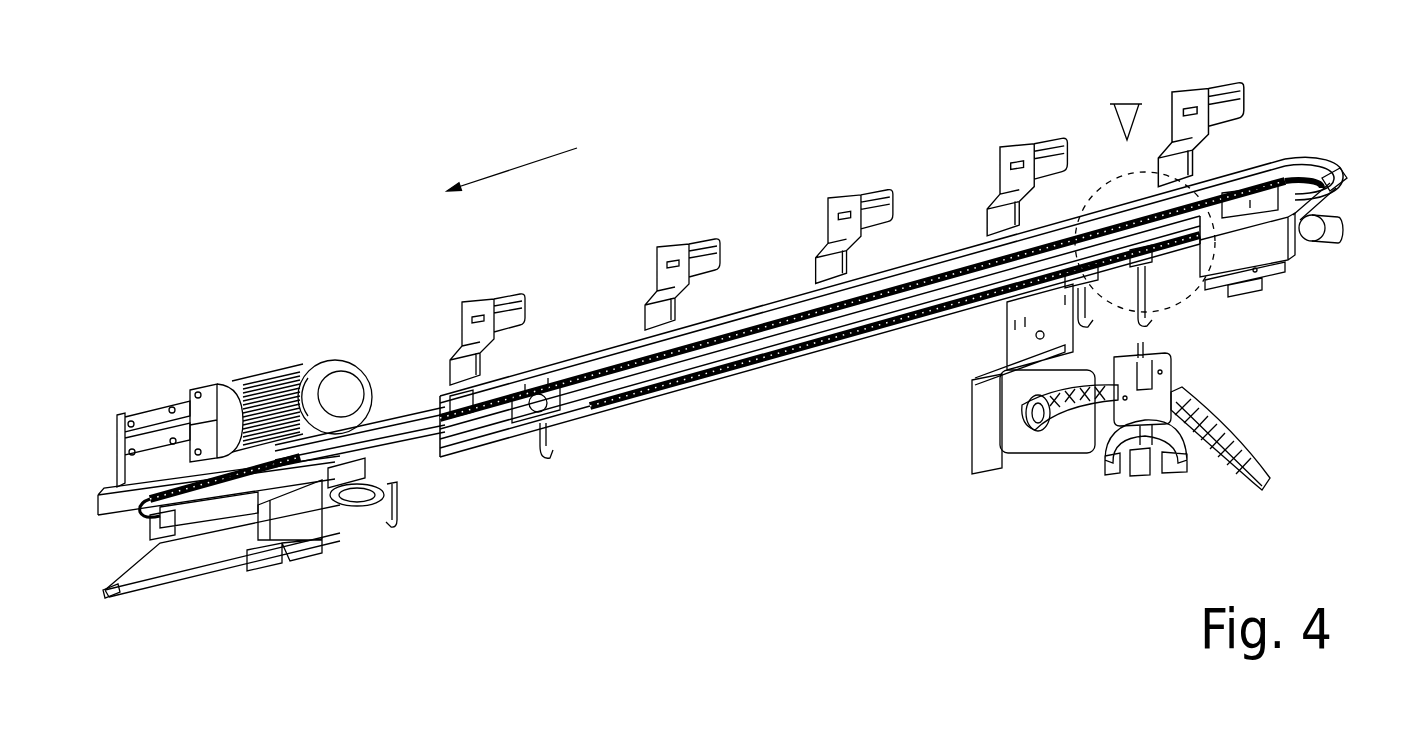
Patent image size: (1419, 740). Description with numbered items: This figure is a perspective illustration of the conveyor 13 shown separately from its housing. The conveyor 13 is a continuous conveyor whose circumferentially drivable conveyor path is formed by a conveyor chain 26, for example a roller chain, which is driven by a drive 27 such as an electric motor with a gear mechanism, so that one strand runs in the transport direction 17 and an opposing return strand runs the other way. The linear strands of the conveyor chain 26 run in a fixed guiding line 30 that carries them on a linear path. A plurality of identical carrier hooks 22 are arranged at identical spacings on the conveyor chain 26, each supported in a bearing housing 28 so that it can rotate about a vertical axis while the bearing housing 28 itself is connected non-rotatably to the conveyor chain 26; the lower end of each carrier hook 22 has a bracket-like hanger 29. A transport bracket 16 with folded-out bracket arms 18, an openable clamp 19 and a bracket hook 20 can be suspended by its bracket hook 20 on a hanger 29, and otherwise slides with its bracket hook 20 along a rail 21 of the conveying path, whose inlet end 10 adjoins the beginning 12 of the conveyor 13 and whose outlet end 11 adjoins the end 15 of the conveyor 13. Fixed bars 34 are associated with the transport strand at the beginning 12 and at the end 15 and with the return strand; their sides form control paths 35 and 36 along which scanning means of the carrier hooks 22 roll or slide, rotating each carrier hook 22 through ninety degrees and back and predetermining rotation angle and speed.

The inlet end 10 is at (732, 364).
The outlet end 11 is at (153, 568).
The beginning of the conveyor 12 is at (1209, 236).
The conveyor 13 is at (741, 300).
The end of the conveyor 15 is at (290, 426).
The transport bracket 16 is at (1148, 456).
The transport direction 17 is at (515, 165).
The bracket arms 18 is at (1063, 435).
The clamp 19 is at (1153, 468).
The bracket hook 20 is at (1188, 255).
The rail 21 is at (108, 593).
The carrier hook 22 is at (1120, 227).
The conveyor chain 26 is at (593, 363).
The drive 27 is at (320, 370).
The bearing housing 28 is at (551, 380).
The hanger 29 is at (548, 445).
The guiding line 30 is at (750, 348).
The bar 34 is at (410, 425).
The control path 35 is at (345, 435).
The control path 36 is at (445, 433).